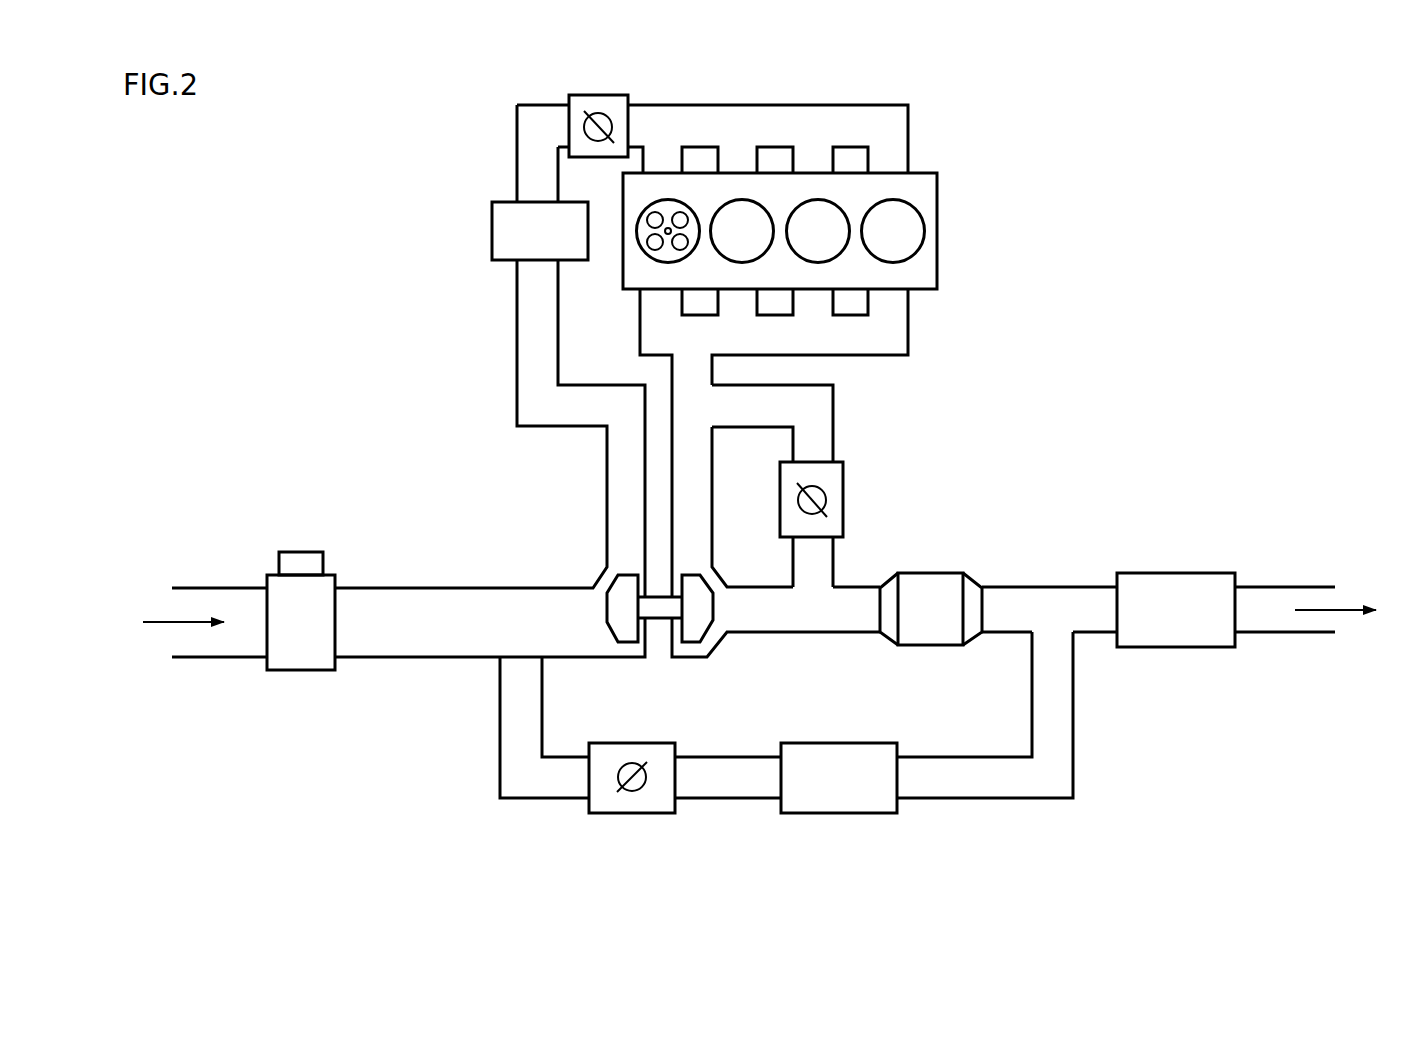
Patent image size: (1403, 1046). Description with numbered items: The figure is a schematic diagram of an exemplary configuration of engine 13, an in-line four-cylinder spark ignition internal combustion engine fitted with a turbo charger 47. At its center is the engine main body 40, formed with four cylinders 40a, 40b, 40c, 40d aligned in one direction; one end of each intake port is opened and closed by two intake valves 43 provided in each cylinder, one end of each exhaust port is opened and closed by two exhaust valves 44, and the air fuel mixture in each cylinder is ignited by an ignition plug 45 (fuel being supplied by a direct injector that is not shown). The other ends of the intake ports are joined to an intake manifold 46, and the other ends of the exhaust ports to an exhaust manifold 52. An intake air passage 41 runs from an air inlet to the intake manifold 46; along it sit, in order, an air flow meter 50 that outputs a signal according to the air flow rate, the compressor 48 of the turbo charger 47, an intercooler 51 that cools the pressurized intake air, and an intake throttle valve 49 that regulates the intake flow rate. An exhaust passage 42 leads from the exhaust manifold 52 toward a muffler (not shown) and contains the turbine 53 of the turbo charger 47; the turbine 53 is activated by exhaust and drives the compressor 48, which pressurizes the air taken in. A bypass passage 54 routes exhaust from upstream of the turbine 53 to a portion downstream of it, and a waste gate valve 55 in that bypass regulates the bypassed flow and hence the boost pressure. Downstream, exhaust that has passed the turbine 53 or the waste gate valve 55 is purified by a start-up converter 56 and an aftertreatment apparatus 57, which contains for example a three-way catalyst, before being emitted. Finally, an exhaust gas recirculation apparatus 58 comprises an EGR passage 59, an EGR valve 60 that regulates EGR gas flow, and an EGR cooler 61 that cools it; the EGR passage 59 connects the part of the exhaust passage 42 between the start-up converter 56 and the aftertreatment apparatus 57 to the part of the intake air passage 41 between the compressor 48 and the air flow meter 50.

The engine 13 is at (1139, 321).
The engine main body 40 is at (938, 218).
The cylinder 40a is at (661, 200).
The cylinder 40b is at (738, 200).
The cylinder 40c is at (810, 200).
The cylinder 40d is at (883, 200).
The intake air passage 41 is at (512, 357).
The exhaust passage 42 is at (1042, 584).
The intake valve 43 is at (648, 214).
The exhaust valve 44 is at (650, 245).
The ignition plug 45 is at (664, 231).
The intake manifold 46 is at (910, 120).
The turbo charger 47 is at (718, 619).
The compressor 48 is at (616, 622).
The intake throttle valve 49 is at (578, 122).
The air flow meter 50 is at (300, 661).
The intercooler 51 is at (500, 232).
The exhaust manifold 52 is at (908, 328).
The turbine 53 is at (692, 624).
The bypass passage 54 is at (838, 421).
The waste gate valve 55 is at (835, 484).
The start-up converter 56 is at (928, 584).
The aftertreatment apparatus 57 is at (1173, 582).
The exhaust gas recirculation (EGR) apparatus 58 is at (1077, 731).
The EGR passage 59 is at (996, 787).
The EGR valve 60 is at (651, 800).
The EGR cooler 61 is at (843, 800).